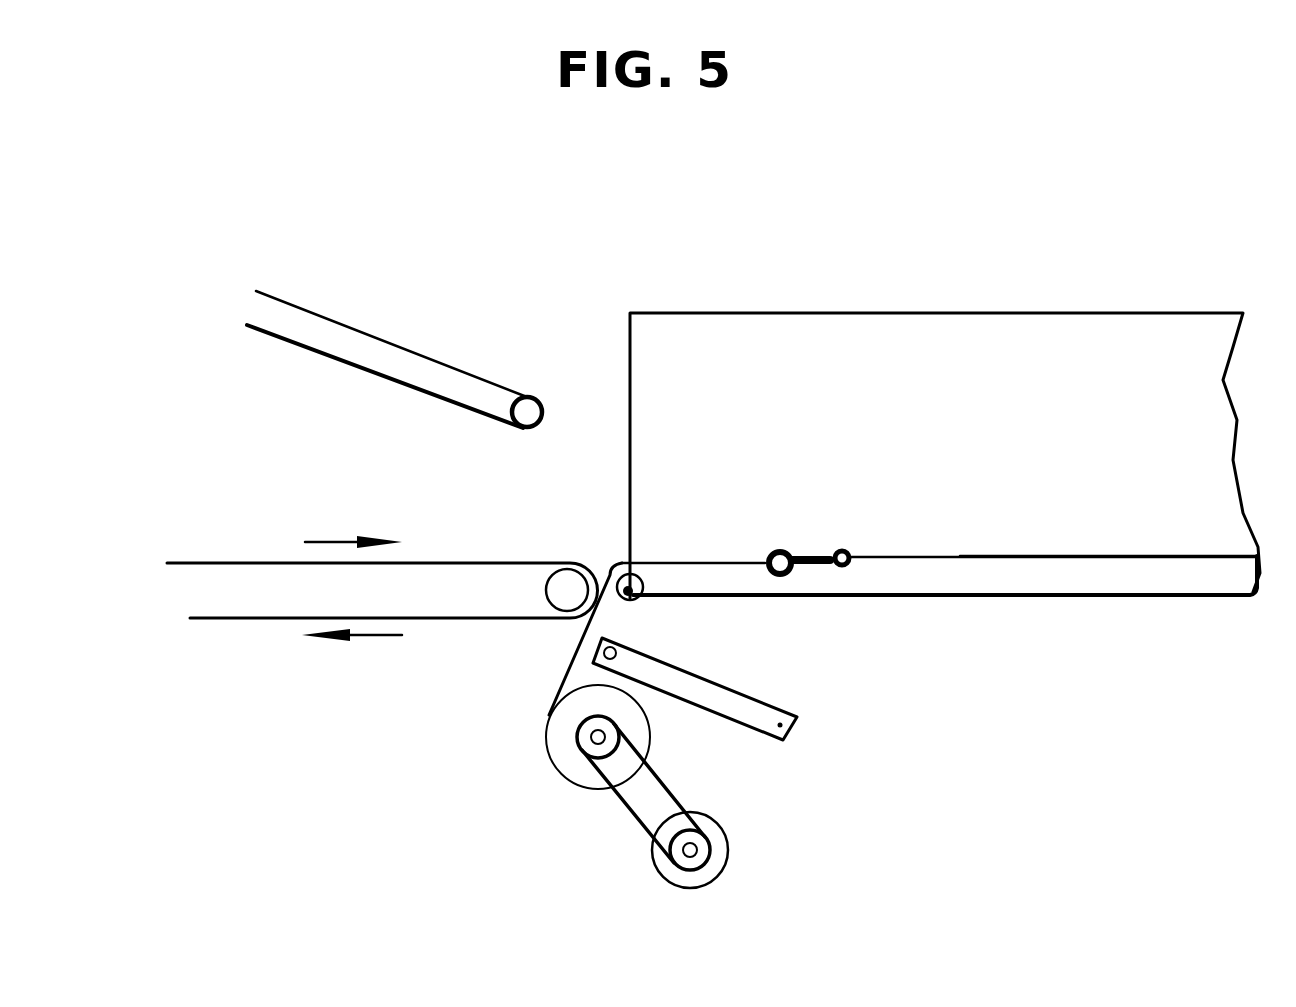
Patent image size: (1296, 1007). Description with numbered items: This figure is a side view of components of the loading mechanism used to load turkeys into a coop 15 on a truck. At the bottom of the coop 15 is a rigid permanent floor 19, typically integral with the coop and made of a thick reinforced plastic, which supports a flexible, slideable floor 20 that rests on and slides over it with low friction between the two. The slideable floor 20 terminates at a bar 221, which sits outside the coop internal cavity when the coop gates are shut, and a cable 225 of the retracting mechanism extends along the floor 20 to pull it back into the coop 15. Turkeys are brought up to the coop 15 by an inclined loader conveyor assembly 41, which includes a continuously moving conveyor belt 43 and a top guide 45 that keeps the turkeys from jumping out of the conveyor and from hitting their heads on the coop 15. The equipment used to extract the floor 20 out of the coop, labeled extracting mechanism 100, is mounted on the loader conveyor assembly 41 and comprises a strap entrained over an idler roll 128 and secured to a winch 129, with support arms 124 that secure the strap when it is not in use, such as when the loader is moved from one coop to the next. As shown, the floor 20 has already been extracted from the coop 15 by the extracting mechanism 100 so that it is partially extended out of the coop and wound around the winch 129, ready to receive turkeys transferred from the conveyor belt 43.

The coop 15 is at (932, 313).
The permanent floor 19 is at (1020, 594).
The slideable floor 20 is at (688, 562).
The loader conveyor assembly 41 is at (226, 559).
The conveyor belt 43 is at (337, 541).
The top guide 45 is at (368, 335).
The extracting mechanism 100 is at (472, 696).
The support arms 124 is at (731, 700).
The idler roll 128 is at (626, 596).
The winch 129 is at (563, 748).
The bar 221 is at (785, 555).
The cable 225 is at (1003, 555).